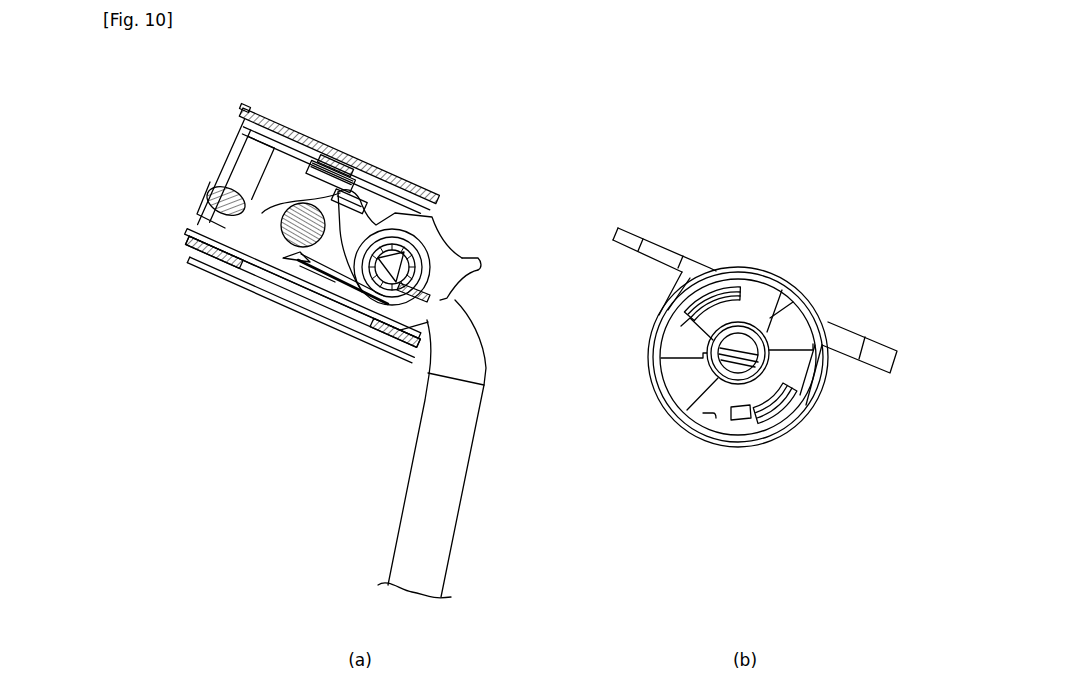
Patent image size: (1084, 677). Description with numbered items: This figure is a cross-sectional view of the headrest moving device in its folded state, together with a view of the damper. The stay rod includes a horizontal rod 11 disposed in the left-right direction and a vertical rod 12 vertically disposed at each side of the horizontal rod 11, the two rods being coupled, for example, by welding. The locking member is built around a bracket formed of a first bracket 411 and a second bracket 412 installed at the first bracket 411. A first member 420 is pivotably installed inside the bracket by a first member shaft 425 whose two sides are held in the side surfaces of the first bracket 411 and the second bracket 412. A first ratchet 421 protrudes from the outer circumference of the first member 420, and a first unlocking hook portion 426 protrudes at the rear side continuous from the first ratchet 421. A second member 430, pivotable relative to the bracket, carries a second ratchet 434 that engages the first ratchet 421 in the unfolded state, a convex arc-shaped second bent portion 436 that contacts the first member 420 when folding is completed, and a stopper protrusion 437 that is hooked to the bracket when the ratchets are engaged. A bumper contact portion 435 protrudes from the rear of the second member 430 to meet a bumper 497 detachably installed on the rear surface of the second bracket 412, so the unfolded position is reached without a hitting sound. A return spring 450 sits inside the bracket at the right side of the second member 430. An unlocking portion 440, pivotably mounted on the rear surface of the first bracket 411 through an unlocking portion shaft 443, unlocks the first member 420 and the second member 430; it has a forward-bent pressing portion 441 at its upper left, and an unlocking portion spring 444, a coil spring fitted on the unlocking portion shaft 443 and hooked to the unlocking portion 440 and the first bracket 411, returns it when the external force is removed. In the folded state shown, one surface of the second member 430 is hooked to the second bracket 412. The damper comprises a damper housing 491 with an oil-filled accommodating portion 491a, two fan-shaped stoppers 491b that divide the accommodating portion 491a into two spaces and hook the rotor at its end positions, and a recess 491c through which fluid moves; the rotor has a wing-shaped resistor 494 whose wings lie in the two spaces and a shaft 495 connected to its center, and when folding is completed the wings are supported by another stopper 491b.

The horizontal rod 11 is at (416, 269).
The vertical rod 12 is at (437, 465).
The first bracket 411 is at (201, 250).
The second bracket 412 is at (188, 233).
The first member 420 is at (246, 244).
The first ratchet 421 is at (318, 278).
The first member shaft 425 is at (291, 212).
The first unlocking hook portion 426 is at (351, 200).
The second member 430 is at (446, 233).
The second ratchet 434 is at (381, 203).
The bumper contact portion 435 is at (470, 267).
The second bent portion 436 is at (291, 258).
The stopper protrusion 437 is at (346, 285).
The unlocking portion 440 is at (228, 151).
The pressing portion 441 is at (233, 163).
The unlocking portion shaft 443 is at (345, 166).
The unlocking portion spring 444 is at (314, 163).
The return spring 450 is at (386, 302).
The bumper 497 is at (380, 167).
The damper housing 491 is at (654, 328).
The accommodating portion 491a is at (710, 416).
The stopper 491b is at (697, 372).
The recess 491c is at (748, 423).
The resistor 494 is at (793, 372).
The shaft 495 is at (748, 348).